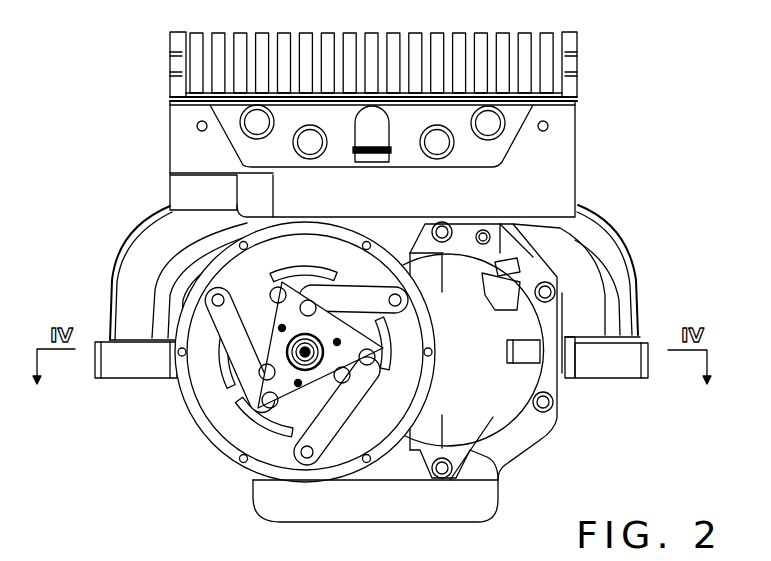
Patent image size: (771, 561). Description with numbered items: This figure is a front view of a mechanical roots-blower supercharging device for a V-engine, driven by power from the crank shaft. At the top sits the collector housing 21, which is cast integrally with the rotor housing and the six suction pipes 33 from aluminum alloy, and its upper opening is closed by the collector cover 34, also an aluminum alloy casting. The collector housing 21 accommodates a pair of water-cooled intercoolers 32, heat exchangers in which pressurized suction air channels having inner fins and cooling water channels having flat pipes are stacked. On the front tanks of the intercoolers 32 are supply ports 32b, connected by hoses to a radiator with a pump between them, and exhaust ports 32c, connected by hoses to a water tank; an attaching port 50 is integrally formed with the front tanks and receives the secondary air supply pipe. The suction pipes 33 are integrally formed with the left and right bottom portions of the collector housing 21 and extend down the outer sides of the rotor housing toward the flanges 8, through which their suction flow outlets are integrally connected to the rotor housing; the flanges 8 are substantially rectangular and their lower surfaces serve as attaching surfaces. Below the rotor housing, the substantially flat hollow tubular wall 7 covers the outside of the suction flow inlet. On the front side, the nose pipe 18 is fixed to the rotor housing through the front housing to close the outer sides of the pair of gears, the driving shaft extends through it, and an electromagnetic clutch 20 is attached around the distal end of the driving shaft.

The hollow tubular wall 7 is at (478, 505).
The flanges 8 is at (95, 368).
The nose pipe 18 is at (488, 417).
The electromagnetic clutch 20 is at (213, 437).
The collector housing 21 is at (565, 143).
The water-cooled intercoolers 32 is at (250, 152).
The supply ports 32b is at (310, 160).
The exhaust ports 32c is at (248, 127).
The suction pipes 33 is at (118, 252).
The collector cover 34 is at (577, 42).
The attaching port 50 is at (372, 163).